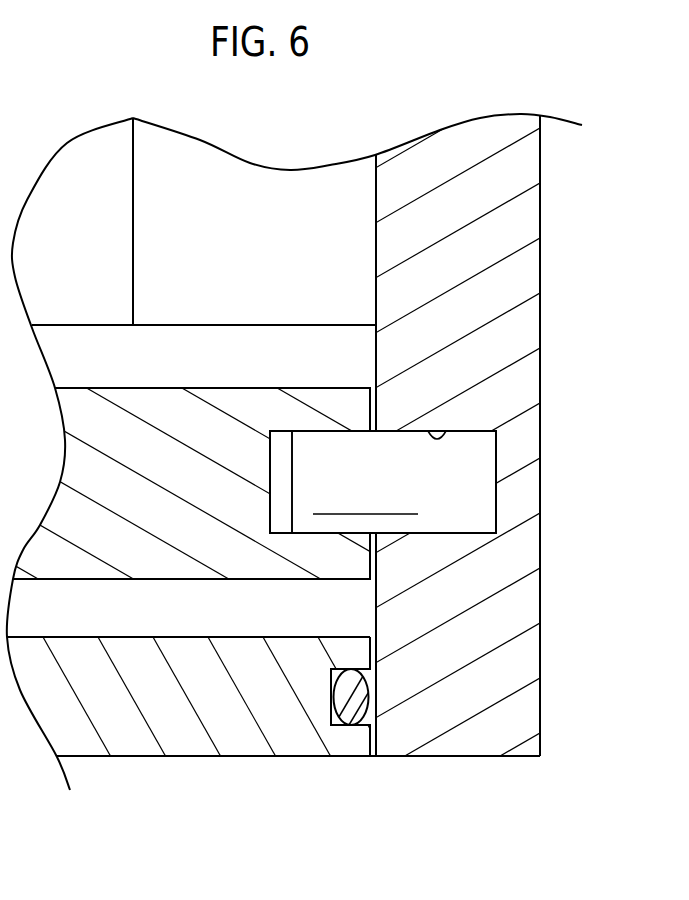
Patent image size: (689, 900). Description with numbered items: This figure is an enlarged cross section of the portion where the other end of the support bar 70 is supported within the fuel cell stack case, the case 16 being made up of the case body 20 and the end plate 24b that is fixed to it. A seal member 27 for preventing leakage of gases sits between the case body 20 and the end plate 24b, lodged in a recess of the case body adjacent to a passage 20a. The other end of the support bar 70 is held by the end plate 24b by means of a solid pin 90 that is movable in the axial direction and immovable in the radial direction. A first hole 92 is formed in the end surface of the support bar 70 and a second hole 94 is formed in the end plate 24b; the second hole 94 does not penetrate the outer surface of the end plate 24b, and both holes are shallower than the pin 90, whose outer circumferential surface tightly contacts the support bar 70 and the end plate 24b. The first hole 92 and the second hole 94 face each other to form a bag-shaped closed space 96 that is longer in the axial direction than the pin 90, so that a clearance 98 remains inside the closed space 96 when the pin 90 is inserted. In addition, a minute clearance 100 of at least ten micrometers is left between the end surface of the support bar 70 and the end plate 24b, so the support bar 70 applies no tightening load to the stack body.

The housing assembly 16 is at (333, 826).
The case body 20 is at (345, 758).
The passage / gap in housing body 20a is at (167, 636).
The end plate 24b is at (407, 758).
The seal member 27 is at (365, 688).
The support bar 70 is at (125, 386).
The pin 90 is at (485, 455).
The first hole 92 is at (322, 434).
The second hole 94 is at (441, 431).
The closed space 96 is at (248, 444).
The clearance 98 is at (279, 440).
The clearance 100 is at (373, 572).